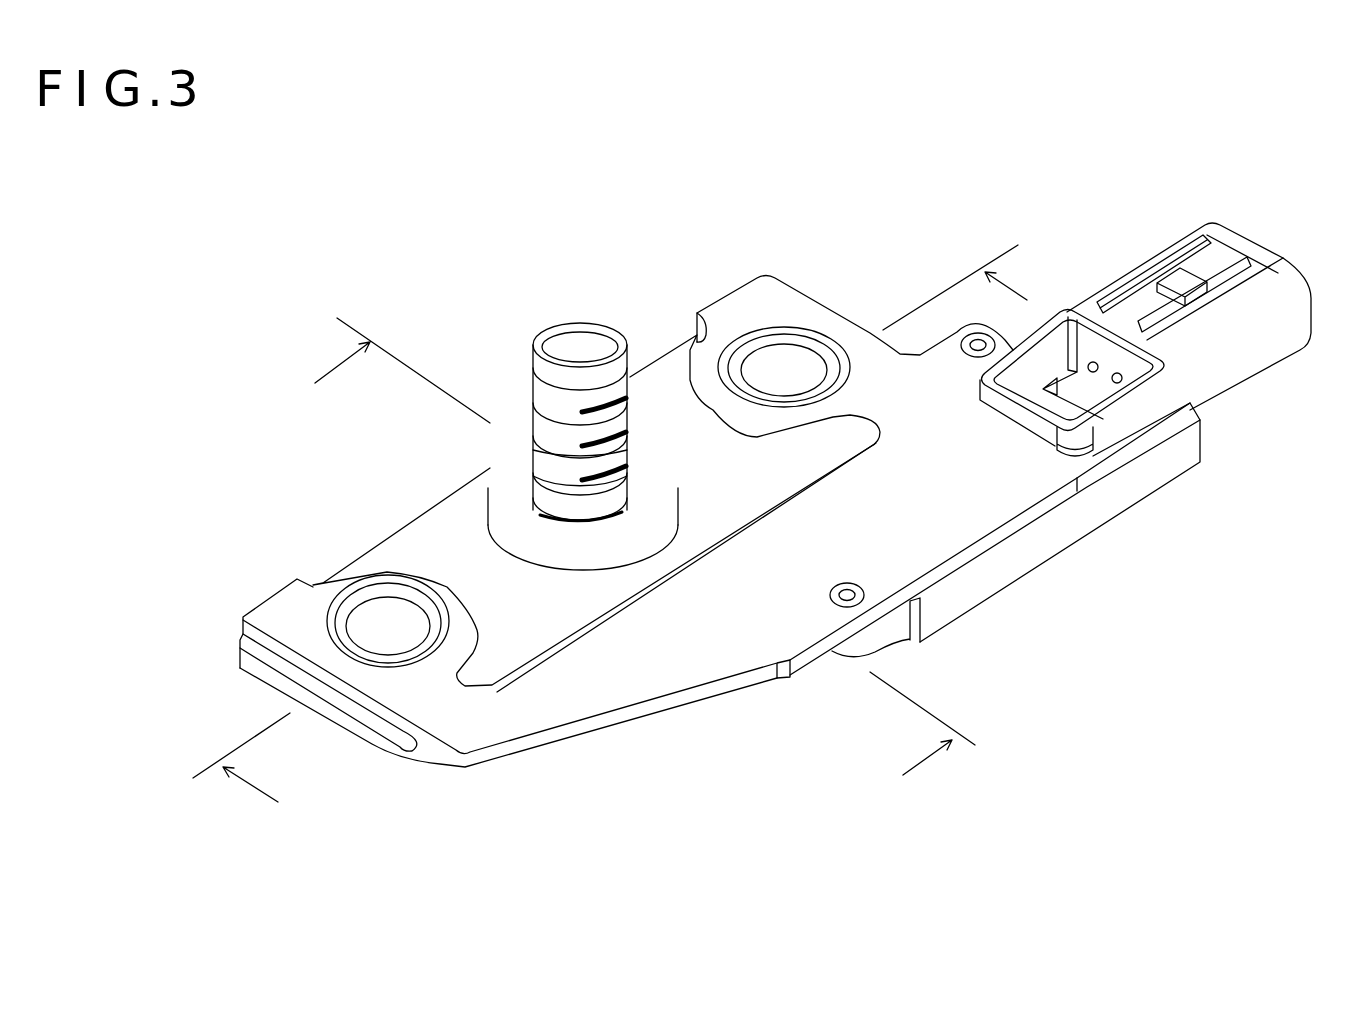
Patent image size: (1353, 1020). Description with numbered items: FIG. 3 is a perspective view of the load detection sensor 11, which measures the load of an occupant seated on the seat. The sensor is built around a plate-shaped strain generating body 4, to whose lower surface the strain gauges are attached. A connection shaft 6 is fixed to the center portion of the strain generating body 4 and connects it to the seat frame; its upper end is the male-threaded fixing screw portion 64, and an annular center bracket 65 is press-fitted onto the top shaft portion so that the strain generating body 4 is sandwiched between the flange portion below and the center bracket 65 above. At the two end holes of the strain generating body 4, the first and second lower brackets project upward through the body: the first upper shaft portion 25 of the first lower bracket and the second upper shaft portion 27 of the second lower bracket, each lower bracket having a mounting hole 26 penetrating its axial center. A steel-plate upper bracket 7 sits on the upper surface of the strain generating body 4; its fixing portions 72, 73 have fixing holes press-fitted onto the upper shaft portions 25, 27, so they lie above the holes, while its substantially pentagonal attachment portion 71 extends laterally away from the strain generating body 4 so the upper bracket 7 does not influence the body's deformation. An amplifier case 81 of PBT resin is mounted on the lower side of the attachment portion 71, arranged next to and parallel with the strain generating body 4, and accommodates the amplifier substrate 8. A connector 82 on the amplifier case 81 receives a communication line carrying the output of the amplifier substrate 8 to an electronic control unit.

The load detection sensor 11 is at (411, 220).
The strain generating body 4 is at (661, 385).
The connection shaft 6 is at (583, 338).
The fixing screw portion 64 is at (545, 395).
The center bracket 65 is at (500, 480).
The upper bracket 7 is at (657, 675).
The attachment portion 71 is at (792, 553).
The fixing portion 72 is at (285, 610).
The fixing portion 73 is at (752, 300).
The first upper shaft portion 25 is at (343, 640).
The mounting hole 26 is at (783, 370).
The second upper shaft portion 27 is at (822, 340).
The amplifier substrate 8 is at (1005, 585).
The amplifier case 81 is at (1035, 618).
The connector 82 is at (1237, 357).